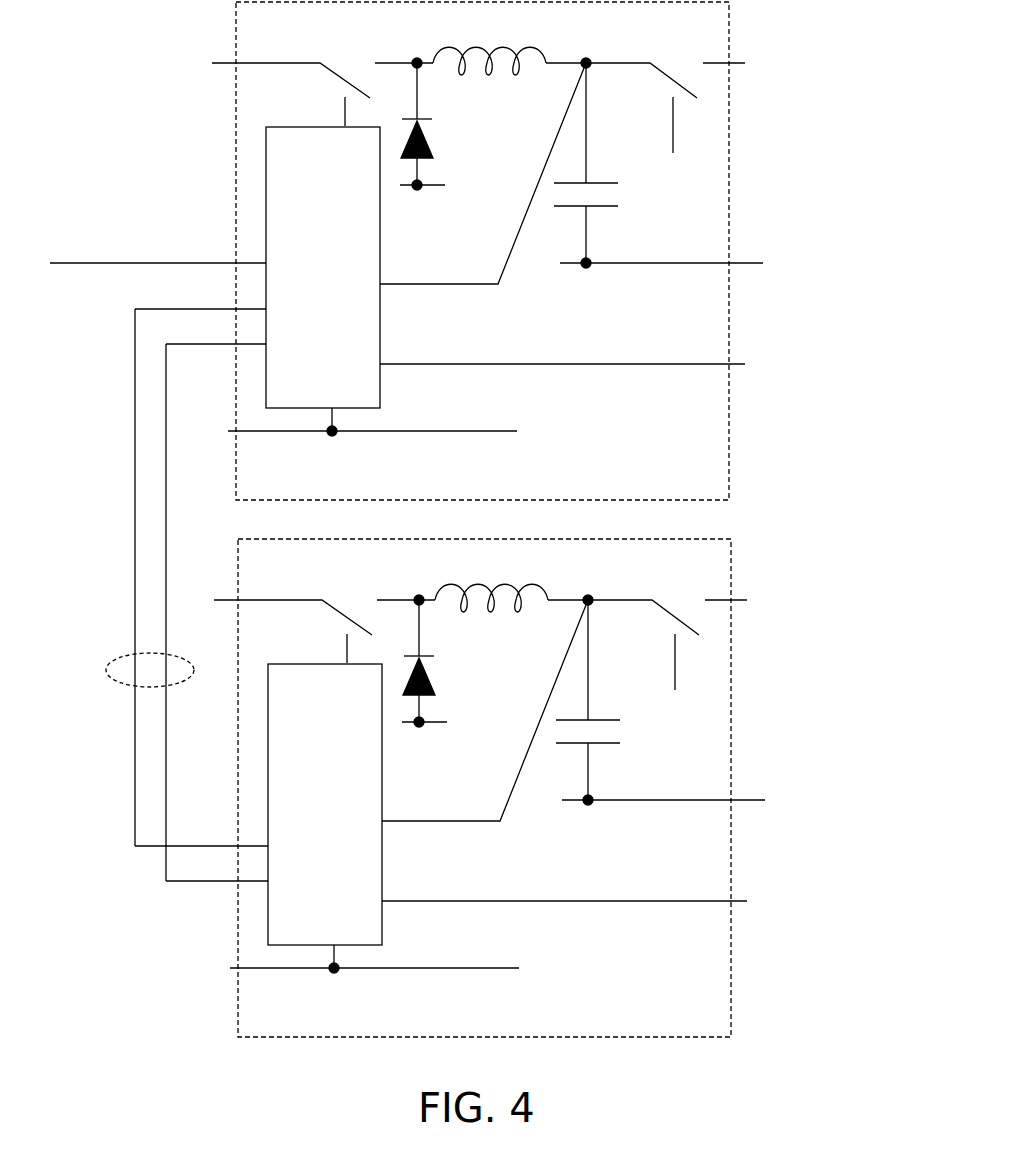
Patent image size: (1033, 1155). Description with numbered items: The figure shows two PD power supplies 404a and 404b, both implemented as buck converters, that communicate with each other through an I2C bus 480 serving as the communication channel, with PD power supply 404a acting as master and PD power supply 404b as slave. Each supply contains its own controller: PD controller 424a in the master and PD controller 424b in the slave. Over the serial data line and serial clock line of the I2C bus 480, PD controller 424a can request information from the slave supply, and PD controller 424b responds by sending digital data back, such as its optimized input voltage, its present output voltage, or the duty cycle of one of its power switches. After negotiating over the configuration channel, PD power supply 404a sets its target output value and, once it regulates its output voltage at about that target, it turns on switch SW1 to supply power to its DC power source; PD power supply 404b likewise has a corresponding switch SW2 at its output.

The PD power supply 404a is at (298, 32).
The PD power supply 404b is at (473, 788).
The PD controller 424a is at (354, 271).
The PD controller 424b is at (325, 804).
The I2C bus 480 is at (128, 658).
The switch SW1 is at (660, 52).
The switch SW2 is at (655, 618).